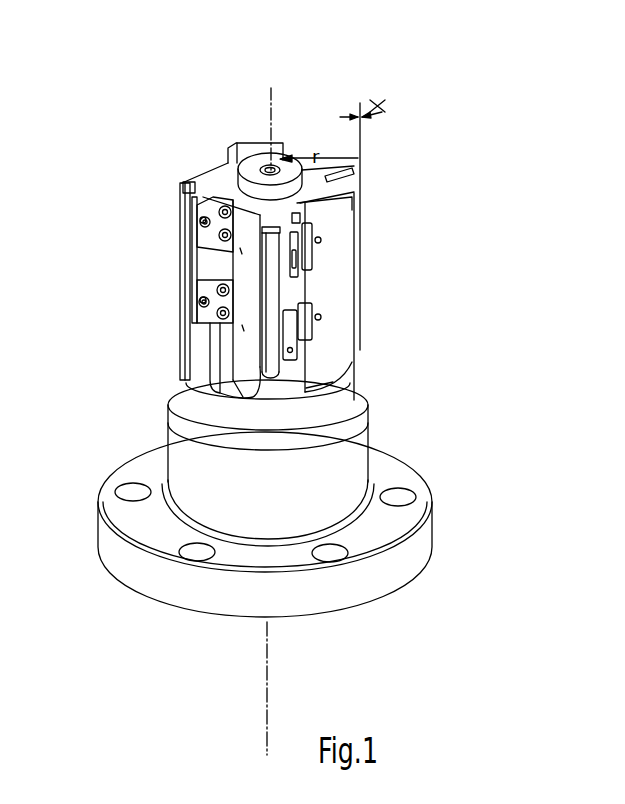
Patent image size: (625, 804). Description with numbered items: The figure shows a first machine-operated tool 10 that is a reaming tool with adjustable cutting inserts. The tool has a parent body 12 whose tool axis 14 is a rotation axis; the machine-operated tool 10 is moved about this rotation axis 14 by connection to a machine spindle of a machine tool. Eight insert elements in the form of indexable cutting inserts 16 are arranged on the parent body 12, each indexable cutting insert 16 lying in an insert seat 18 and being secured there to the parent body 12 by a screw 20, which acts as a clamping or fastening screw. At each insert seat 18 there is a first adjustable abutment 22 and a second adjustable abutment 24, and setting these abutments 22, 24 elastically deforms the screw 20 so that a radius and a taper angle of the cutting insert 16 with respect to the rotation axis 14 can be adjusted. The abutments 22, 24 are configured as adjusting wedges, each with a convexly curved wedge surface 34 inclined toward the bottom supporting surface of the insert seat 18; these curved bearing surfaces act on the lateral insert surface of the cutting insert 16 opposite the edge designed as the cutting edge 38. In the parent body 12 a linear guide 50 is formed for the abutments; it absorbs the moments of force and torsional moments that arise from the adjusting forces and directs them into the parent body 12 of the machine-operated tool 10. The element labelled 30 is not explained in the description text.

The machine-operated tool 10 is at (434, 83).
The parent body 12 is at (325, 512).
The tool axis 14 is at (273, 108).
The indexable cutting insert 16 is at (205, 313).
The insert seat 18 is at (200, 192).
The screw 20 is at (197, 228).
The first adjustable abutment 22 is at (197, 213).
The second adjustable abutment 24 is at (197, 257).
The side panel 30 is at (200, 283).
The wedge surface 34 is at (197, 285).
The cutting edge 38 is at (227, 160).
The linear guide 50 is at (225, 313).